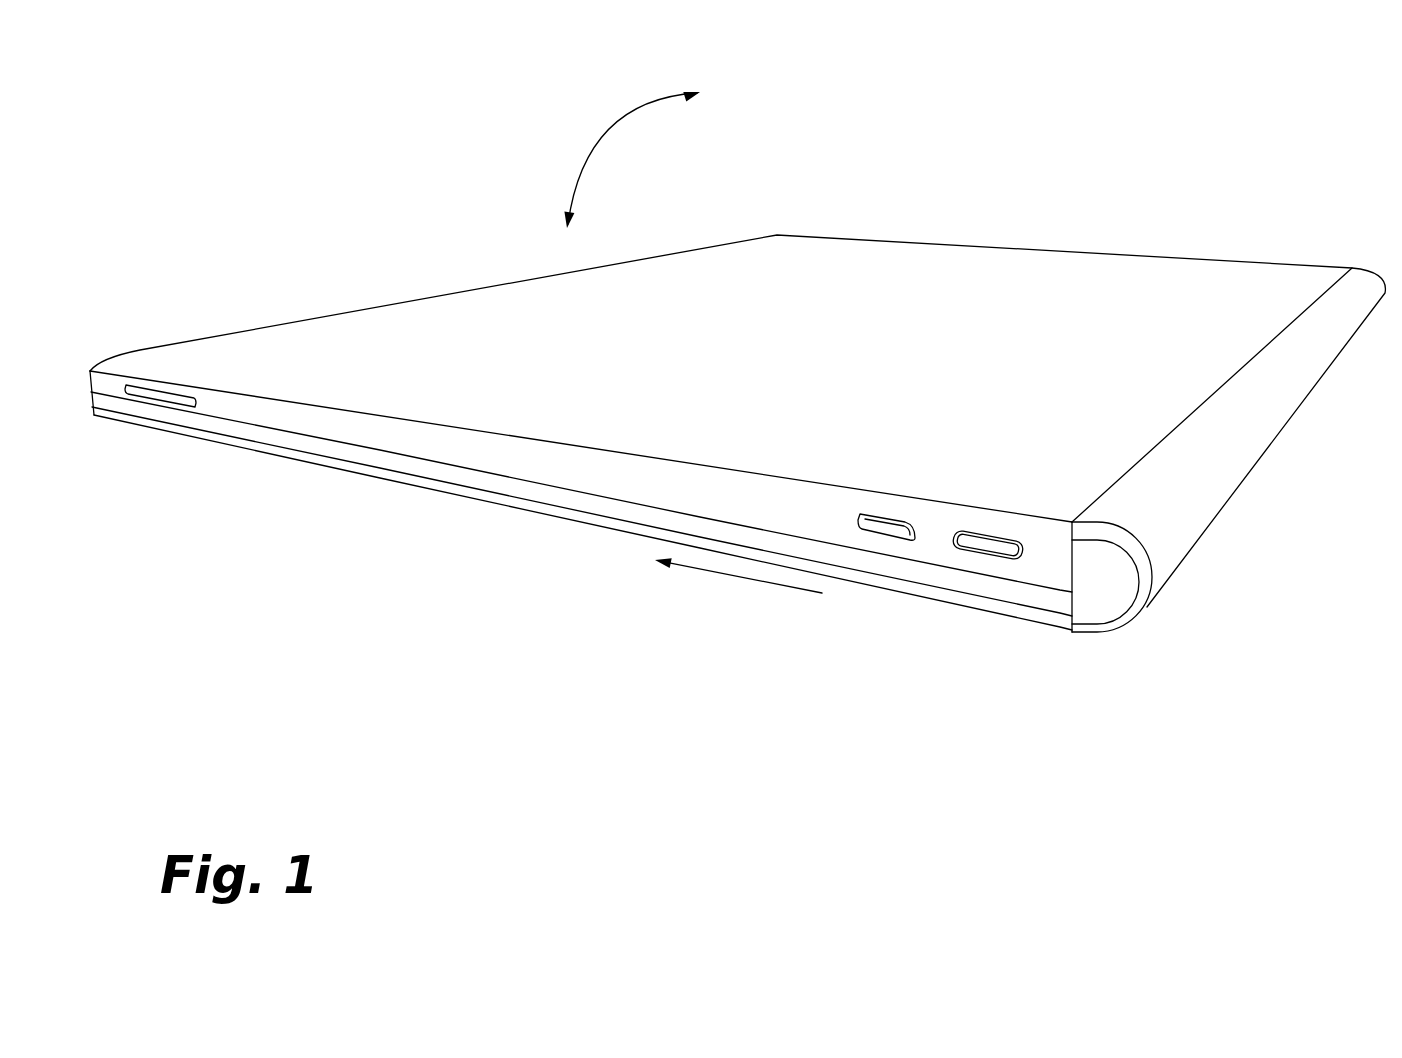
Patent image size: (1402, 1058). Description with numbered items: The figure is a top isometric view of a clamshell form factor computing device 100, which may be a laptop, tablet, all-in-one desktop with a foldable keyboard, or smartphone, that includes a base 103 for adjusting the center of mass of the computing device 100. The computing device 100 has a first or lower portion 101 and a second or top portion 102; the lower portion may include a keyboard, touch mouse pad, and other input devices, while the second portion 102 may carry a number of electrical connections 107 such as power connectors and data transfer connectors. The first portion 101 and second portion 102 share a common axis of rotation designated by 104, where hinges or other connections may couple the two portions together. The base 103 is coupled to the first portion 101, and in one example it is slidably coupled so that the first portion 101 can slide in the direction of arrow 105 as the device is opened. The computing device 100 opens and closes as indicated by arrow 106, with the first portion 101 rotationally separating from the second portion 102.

The computing device 100 is at (299, 184).
The first portion 101 is at (372, 458).
The second portion 102 is at (370, 338).
The base 103 is at (620, 527).
The axis of rotation 104 is at (1143, 657).
The arrow 105 is at (748, 580).
The arrow 106 is at (598, 135).
The electrical connections 107 is at (890, 527).